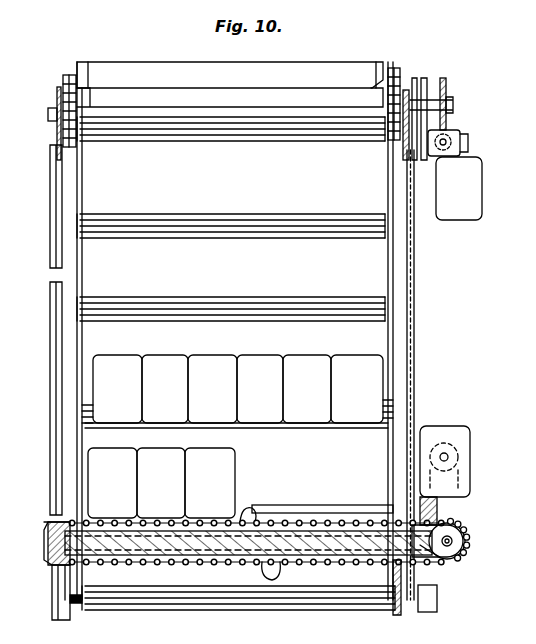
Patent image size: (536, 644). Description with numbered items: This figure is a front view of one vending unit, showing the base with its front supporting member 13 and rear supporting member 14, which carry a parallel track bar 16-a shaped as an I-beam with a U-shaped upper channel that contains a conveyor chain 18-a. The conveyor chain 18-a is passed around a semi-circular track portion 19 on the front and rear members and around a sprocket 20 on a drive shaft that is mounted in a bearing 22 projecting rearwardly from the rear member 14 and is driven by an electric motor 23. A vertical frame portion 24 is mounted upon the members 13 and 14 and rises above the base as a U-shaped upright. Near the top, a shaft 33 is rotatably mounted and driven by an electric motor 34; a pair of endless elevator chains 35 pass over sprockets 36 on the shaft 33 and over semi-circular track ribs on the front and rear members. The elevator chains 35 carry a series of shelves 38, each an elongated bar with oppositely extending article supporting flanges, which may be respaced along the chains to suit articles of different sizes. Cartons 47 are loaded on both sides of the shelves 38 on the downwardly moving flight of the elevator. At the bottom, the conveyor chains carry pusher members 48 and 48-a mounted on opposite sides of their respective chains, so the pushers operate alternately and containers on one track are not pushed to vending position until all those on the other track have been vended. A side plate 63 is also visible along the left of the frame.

The front supporting member 13 is at (53, 606).
The rear supporting member 14 is at (439, 608).
The track bar 16-a is at (183, 560).
The conveyor chain 18-a is at (131, 566).
The semi-circular track portion 19 is at (49, 543).
The sprocket 20 is at (468, 541).
The bearing 22 is at (453, 561).
The electric motor 23 is at (471, 440).
The vertical frame portion 24 is at (428, 333).
The shaft 33 is at (263, 100).
The electric motor 34 is at (483, 200).
The endless elevator chain 35 is at (68, 77).
The sprocket 36 is at (88, 105).
The shelf 38 is at (134, 60).
The carton 47 is at (166, 366).
The pusher member 48 is at (256, 510).
The pusher member 48-a is at (283, 577).
The side plate 63 is at (60, 196).